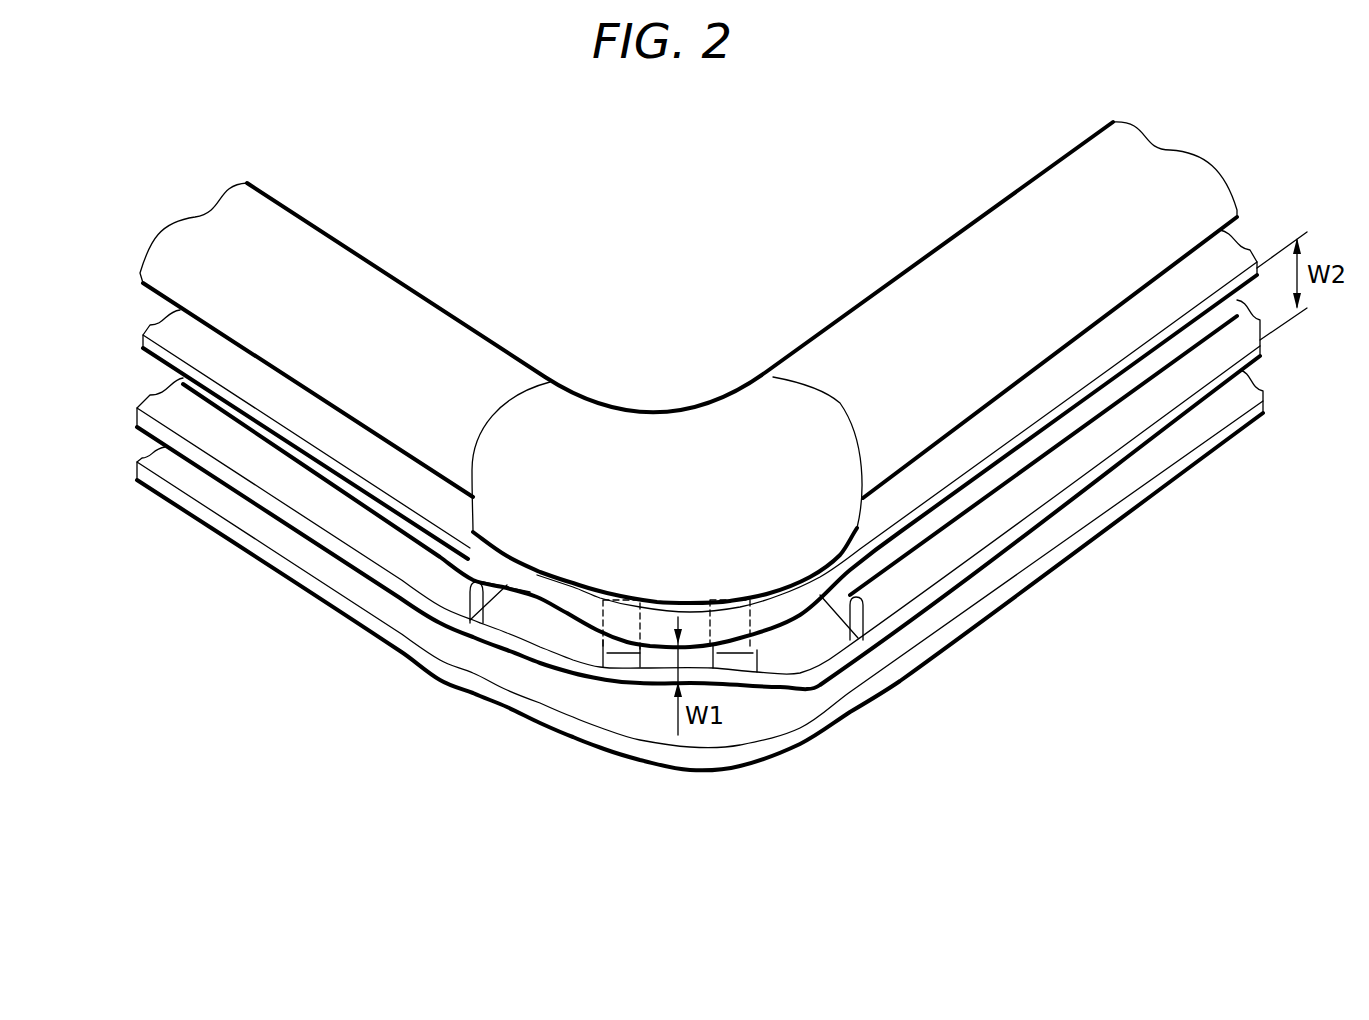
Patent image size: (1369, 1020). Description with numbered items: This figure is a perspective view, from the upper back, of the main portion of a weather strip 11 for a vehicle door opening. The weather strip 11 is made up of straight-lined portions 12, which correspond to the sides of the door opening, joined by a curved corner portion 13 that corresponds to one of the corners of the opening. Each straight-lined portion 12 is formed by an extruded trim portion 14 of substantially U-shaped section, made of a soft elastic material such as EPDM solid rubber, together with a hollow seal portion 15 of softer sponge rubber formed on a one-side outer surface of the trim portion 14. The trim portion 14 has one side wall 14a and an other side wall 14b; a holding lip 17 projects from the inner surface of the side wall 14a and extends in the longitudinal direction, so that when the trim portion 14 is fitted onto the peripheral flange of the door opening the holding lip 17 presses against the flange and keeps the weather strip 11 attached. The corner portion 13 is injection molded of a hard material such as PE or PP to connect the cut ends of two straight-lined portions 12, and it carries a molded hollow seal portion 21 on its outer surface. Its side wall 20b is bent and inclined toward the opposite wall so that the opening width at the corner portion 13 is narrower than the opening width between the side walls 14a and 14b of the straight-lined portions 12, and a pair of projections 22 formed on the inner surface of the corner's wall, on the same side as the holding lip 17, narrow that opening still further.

The weather strip 11 is at (659, 258).
The straight-lined portion 12 is at (412, 180).
The corner portion 13 is at (652, 830).
The trim portion 14 is at (230, 480).
The one side wall 14a is at (297, 523).
The other side wall 14b is at (290, 410).
The hollow seal portion 15 is at (292, 232).
The holding lip 17 is at (470, 617).
The side wall 20b is at (543, 590).
The molded hollow seal portion 21 is at (673, 440).
The projection 22 is at (623, 650).